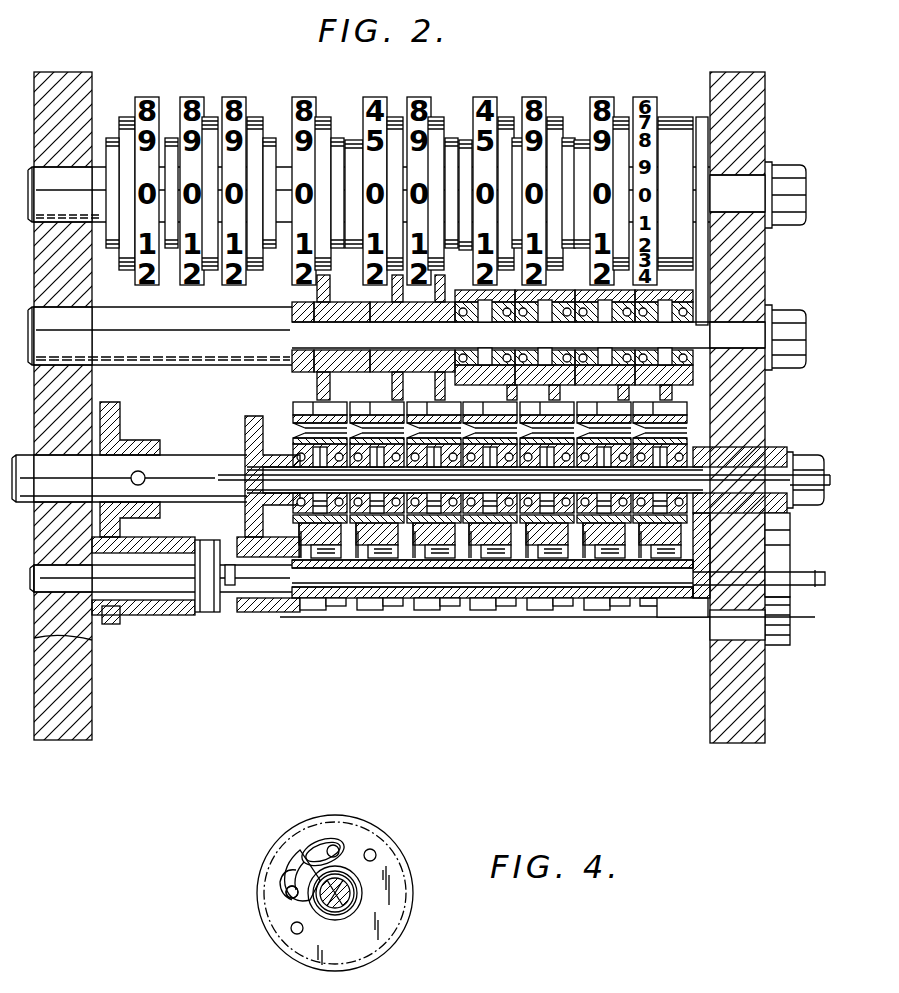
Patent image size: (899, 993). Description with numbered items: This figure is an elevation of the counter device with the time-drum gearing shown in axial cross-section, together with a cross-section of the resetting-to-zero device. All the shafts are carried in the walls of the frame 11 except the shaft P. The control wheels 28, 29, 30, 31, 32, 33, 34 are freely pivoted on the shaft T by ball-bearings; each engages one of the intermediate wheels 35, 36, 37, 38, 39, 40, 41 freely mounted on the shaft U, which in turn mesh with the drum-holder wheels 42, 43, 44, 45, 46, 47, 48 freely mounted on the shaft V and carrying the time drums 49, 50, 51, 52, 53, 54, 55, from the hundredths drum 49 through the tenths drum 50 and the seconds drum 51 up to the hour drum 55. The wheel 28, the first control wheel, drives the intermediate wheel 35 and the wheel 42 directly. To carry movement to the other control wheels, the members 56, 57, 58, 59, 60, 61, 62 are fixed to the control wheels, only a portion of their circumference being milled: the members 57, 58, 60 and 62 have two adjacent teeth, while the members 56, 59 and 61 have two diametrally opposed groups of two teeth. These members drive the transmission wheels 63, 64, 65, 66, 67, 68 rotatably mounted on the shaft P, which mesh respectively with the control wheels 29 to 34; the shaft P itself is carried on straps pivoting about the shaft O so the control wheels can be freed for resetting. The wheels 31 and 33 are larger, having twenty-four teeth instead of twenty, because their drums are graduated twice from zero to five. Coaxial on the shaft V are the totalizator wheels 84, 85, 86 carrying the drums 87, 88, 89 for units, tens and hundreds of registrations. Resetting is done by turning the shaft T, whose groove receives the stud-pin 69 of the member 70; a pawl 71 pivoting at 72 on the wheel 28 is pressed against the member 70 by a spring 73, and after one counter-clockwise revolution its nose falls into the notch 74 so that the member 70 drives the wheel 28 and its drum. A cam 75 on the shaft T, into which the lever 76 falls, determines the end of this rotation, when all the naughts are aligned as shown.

In FIG. 2, the frame 11 is at (78, 698).
In FIG. 2, the shaft V is at (417, 195).
In FIG. 2, the shaft U is at (417, 337).
In FIG. 2, the shaft T is at (401, 478).
In FIG. 4, the shaft T is at (318, 898).
In FIG. 2, the shaft O is at (55, 575).
In FIG. 2, the shaft P is at (770, 575).
In FIG. 2, the drum-holder wheel 86 is at (128, 132).
In FIG. 2, the drum 89 is at (148, 97).
In FIG. 2, the drum 88 is at (188, 97).
In FIG. 2, the drum-holder wheel 85 is at (208, 130).
In FIG. 2, the drum 87 is at (237, 97).
In FIG. 2, the drum-holder wheel 84 is at (255, 135).
In FIG. 2, the hour drum 55 is at (307, 97).
In FIG. 2, the drum-holder wheel 48 is at (325, 138).
In FIG. 2, the time drum 54 is at (378, 97).
In FIG. 2, the drum-holder wheel 47 is at (394, 130).
In FIG. 2, the time drum 53 is at (425, 97).
In FIG. 2, the drum-holder wheel 46 is at (437, 138).
In FIG. 2, the time drum 52 is at (490, 97).
In FIG. 2, the drum-holder wheel 45 is at (507, 125).
In FIG. 2, the seconds drum 51 is at (540, 97).
In FIG. 2, the drum-holder wheel 44 is at (555, 135).
In FIG. 2, the tenths drum 50 is at (602, 97).
In FIG. 2, the drum-holder wheel 43 is at (621, 135).
In FIG. 2, the hundredths drum 49 is at (645, 97).
In FIG. 2, the drum-holder wheel 42 is at (676, 135).
In FIG. 2, the intermediate wheel 41 is at (295, 320).
In FIG. 2, the intermediate wheel 40 is at (350, 302).
In FIG. 2, the intermediate wheel 39 is at (400, 302).
In FIG. 2, the intermediate wheel 38 is at (486, 345).
In FIG. 2, the intermediate wheel 37 is at (545, 345).
In FIG. 2, the intermediate wheel 36 is at (605, 345).
In FIG. 2, the intermediate wheel 35 is at (663, 302).
In FIG. 2, the cam 75 is at (116, 420).
In FIG. 2, the member 70 is at (716, 455).
In FIG. 4, the member 70 is at (362, 893).
In FIG. 2, the pawl 71 is at (745, 517).
In FIG. 4, the pawl 71 is at (296, 878).
In FIG. 2, the pivot 72 is at (700, 520).
In FIG. 4, the pivot 72 is at (284, 892).
In FIG. 4, the spring 73 is at (326, 838).
In FIG. 4, the notch 74 is at (304, 850).
In FIG. 4, the stud-pin 69 is at (340, 912).
In FIG. 2, the member 62 is at (265, 556).
In FIG. 2, the lever 76 is at (114, 625).
In FIG. 2, the control wheel 34 is at (335, 552).
In FIG. 2, the control wheel 33 is at (395, 552).
In FIG. 2, the control wheel 32 is at (438, 552).
In FIG. 2, the control wheel 31 is at (500, 552).
In FIG. 2, the control wheel 30 is at (555, 552).
In FIG. 2, the control wheel 29 is at (612, 552).
In FIG. 2, the control wheel 28 is at (674, 609).
In FIG. 4, the control wheel 28 is at (396, 864).
In FIG. 2, the transmission wheel 68 is at (334, 612).
In FIG. 2, the member 61 is at (340, 604).
In FIG. 2, the transmission wheel 67 is at (404, 612).
In FIG. 2, the member 60 is at (400, 604).
In FIG. 2, the transmission wheel 66 is at (461, 612).
In FIG. 2, the member 59 is at (460, 604).
In FIG. 2, the transmission wheel 65 is at (520, 612).
In FIG. 2, the member 58 is at (518, 604).
In FIG. 2, the transmission wheel 64 is at (570, 612).
In FIG. 2, the member 57 is at (566, 604).
In FIG. 2, the transmission wheel 63 is at (625, 612).
In FIG. 2, the member 56 is at (626, 604).